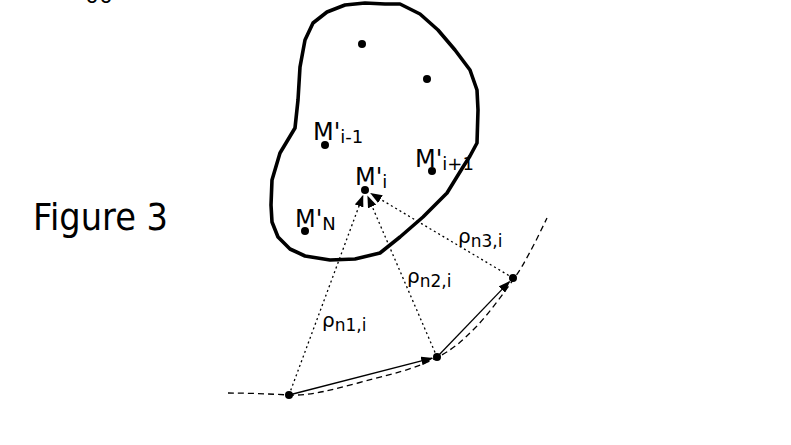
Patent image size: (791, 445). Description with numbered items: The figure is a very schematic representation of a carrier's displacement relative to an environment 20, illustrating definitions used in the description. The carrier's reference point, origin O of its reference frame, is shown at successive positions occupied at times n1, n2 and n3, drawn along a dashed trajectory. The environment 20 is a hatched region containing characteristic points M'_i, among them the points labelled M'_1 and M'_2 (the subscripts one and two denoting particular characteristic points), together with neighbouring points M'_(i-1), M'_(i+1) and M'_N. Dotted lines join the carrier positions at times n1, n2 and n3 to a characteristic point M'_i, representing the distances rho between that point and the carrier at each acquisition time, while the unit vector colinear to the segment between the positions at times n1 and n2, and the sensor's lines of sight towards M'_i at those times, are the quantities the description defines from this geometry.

The environment 20 is at (297, 107).
The point M'1 of the region 1 is at (380, 33).
The point M'2 of the region 2 is at (431, 68).
The acquisition time n1 is at (272, 382).
The acquisition time n2 is at (448, 374).
The time n3 is at (530, 295).